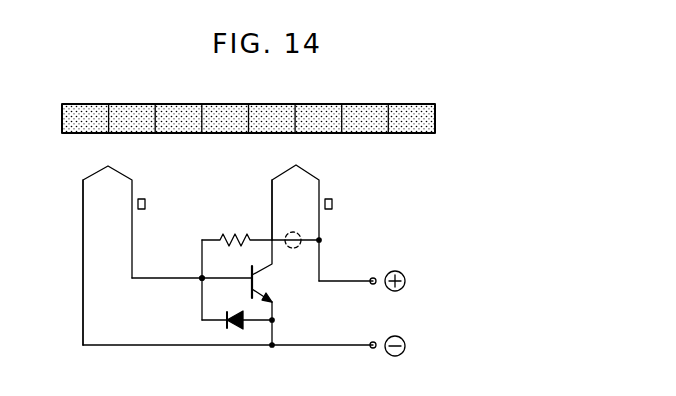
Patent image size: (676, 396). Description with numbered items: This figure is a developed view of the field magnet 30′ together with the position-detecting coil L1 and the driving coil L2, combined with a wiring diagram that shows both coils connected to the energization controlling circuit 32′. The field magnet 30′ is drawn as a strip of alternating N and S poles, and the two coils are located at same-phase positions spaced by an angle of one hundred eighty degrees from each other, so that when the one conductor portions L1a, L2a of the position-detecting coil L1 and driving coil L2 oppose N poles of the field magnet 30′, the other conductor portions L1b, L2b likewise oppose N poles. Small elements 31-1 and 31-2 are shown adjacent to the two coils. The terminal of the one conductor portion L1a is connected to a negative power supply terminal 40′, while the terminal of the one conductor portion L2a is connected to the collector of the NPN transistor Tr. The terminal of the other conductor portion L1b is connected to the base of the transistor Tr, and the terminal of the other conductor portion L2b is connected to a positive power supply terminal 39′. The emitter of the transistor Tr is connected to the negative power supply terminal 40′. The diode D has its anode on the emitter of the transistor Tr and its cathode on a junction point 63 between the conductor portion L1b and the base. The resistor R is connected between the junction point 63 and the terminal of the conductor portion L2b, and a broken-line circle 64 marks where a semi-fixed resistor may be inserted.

The field magnet 30′ is at (435, 120).
The first Hall element 31-1 is at (145, 204).
The second Hall element 31-2 is at (332, 204).
The energization controlling circuit 32′ is at (420, 218).
The positive power supply terminal 39′ is at (377, 278).
The negative power supply terminal 40′ is at (377, 342).
The junction point 63 is at (200, 280).
The circle 64 is at (294, 248).
The position-detecting coil L1 is at (117, 174).
The one conductor portion of the position-detecting coil L1a is at (83, 232).
The other conductor portion of the position-detecting coil L1b is at (132, 242).
The driving coil L2 is at (312, 174).
The one conductor portion of the driving coil L2a is at (272, 205).
The other conductor portion of the driving coil L2b is at (320, 228).
The resistor R is at (237, 237).
The diode D is at (237, 313).
The transistor Tr is at (258, 280).